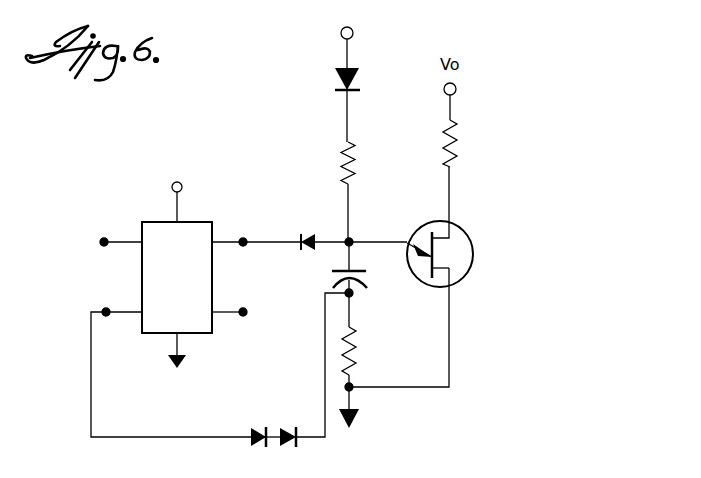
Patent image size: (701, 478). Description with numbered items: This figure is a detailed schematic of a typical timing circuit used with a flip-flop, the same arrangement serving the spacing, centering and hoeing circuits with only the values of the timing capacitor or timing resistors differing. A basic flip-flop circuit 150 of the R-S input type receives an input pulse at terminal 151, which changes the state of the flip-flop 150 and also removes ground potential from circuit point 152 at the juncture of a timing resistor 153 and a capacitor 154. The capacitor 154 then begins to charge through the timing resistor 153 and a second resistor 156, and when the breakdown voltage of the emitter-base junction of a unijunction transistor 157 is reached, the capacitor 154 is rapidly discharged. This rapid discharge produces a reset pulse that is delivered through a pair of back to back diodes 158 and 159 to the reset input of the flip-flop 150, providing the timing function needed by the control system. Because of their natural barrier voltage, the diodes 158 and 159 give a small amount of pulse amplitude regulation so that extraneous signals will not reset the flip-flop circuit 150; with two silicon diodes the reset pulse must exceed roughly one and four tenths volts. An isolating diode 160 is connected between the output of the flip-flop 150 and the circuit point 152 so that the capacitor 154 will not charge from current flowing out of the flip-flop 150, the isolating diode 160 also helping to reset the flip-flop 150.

The flip-flop circuit 150 is at (212, 222).
The terminal 151 is at (104, 242).
The circuit point 152 is at (349, 242).
The timing resistor 153 is at (347, 148).
The capacitor 154 is at (366, 273).
The second resistor 156 is at (356, 336).
The unijunction transistor 157 is at (473, 250).
The diode 158 is at (256, 428).
The diode 159 is at (307, 396).
The isolating diode 160 is at (305, 252).